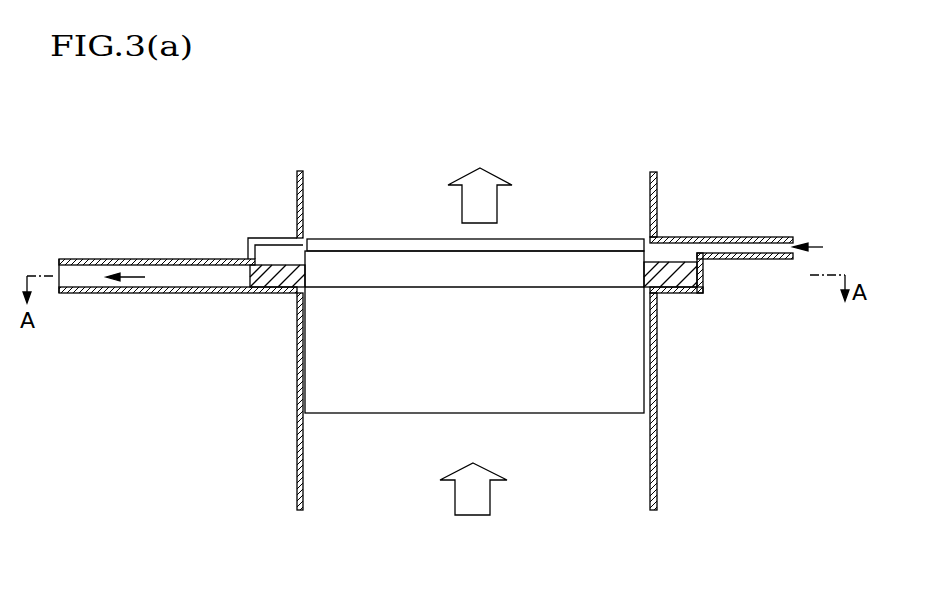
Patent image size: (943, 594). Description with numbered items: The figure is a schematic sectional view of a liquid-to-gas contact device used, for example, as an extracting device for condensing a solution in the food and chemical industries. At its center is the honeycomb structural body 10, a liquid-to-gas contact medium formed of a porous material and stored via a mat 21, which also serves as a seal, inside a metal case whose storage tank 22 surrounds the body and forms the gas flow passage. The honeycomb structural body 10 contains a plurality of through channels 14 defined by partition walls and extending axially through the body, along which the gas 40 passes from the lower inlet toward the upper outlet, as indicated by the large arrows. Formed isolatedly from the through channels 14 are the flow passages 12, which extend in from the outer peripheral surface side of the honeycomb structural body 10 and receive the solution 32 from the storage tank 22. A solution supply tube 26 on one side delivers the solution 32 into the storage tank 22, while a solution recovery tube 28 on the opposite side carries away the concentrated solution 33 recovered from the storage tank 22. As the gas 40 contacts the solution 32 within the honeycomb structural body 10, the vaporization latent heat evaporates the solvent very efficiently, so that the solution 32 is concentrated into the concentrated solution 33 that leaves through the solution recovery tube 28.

The honeycomb structural body 10 is at (600, 372).
The flow passages 12 is at (346, 277).
The through channels 14 is at (531, 239).
The mat 21 is at (657, 356).
The storage tank 22 is at (703, 277).
The solution supply tube 26 is at (762, 246).
The solution recovery tube 28 is at (149, 306).
The solution 32 is at (678, 281).
The concentrated solution 33 is at (265, 290).
The gas 40 is at (476, 360).